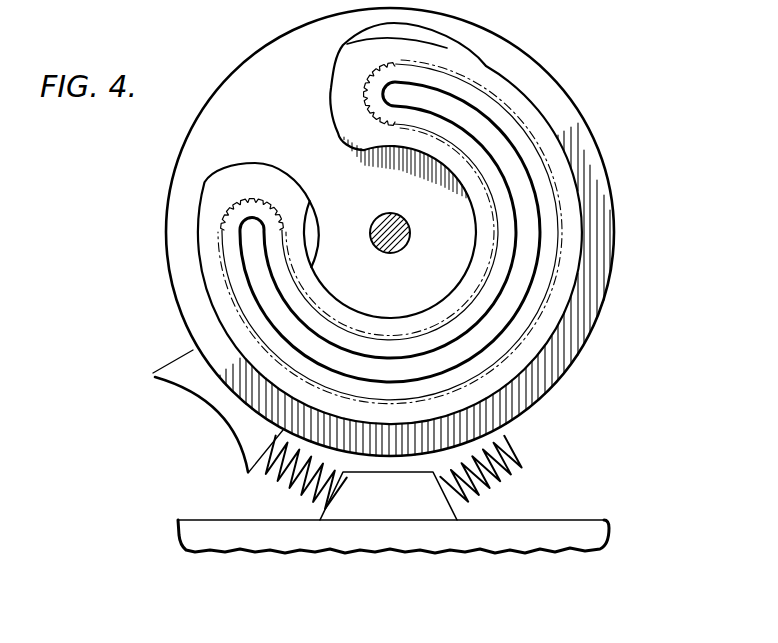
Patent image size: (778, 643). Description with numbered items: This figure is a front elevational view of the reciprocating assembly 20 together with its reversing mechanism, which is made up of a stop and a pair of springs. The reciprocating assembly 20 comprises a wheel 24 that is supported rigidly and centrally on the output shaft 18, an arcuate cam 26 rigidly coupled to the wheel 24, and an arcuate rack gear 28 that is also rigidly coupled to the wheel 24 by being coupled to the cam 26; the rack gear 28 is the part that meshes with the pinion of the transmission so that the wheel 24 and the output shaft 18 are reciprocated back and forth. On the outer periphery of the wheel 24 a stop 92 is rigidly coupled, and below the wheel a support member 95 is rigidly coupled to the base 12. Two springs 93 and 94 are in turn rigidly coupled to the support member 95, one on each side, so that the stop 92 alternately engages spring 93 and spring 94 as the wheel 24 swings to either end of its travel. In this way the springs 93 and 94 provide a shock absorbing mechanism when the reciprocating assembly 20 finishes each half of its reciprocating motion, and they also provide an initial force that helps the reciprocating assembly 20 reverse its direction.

The base 12 is at (597, 506).
The output shaft 18 is at (387, 213).
The reciprocating assembly 20 is at (582, 78).
The wheel 24 is at (604, 160).
The arcuate cam 26 is at (583, 273).
The arcuate rack gear 28 is at (543, 312).
The stop 92 is at (172, 380).
The spring 93 is at (504, 478).
The spring 94 is at (273, 481).
The support member 95 is at (398, 508).